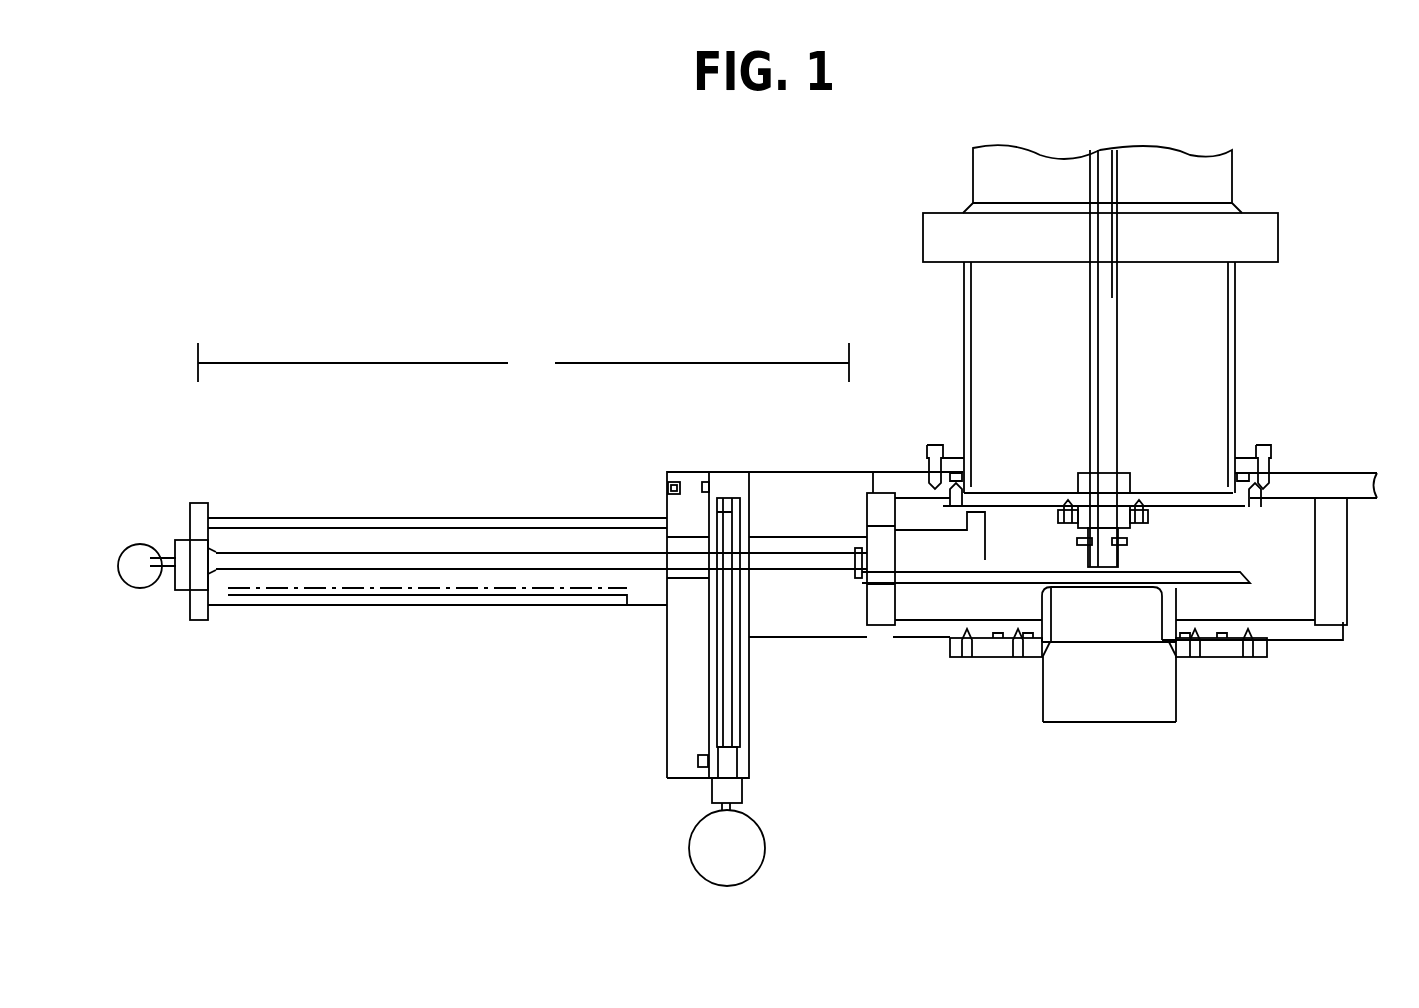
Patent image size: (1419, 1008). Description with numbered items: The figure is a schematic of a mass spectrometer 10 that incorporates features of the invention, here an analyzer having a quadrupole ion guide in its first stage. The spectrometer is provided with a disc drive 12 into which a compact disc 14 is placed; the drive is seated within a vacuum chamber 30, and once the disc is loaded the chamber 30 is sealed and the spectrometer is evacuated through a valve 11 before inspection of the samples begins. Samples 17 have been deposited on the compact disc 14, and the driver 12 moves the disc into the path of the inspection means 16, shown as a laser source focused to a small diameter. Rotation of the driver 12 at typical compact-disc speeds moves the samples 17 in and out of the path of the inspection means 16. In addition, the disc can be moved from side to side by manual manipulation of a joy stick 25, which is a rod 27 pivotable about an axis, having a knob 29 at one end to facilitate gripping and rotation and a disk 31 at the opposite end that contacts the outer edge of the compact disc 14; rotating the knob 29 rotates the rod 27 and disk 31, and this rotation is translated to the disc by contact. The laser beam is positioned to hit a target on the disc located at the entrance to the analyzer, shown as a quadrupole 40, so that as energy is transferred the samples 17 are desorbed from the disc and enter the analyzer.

The mass spectrometer 10 is at (732, 303).
The valve 11 is at (678, 760).
The disc drive 12 is at (1040, 683).
The compact disc 14 is at (1210, 571).
The inspection means 16 is at (1128, 564).
The samples 17 is at (1103, 565).
The joy stick 25 is at (172, 582).
The rod 27 is at (462, 552).
The knob 29 is at (143, 546).
The vacuum chamber 30 is at (523, 362).
The disk 31 is at (930, 592).
The quadrupole 40 is at (1097, 245).